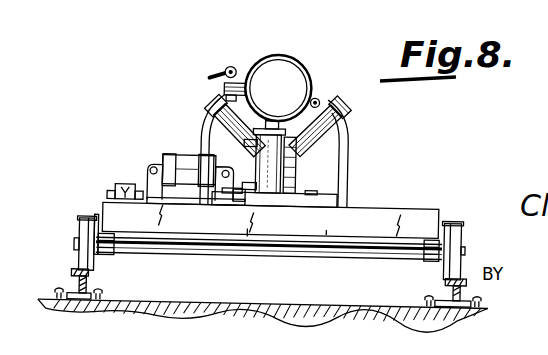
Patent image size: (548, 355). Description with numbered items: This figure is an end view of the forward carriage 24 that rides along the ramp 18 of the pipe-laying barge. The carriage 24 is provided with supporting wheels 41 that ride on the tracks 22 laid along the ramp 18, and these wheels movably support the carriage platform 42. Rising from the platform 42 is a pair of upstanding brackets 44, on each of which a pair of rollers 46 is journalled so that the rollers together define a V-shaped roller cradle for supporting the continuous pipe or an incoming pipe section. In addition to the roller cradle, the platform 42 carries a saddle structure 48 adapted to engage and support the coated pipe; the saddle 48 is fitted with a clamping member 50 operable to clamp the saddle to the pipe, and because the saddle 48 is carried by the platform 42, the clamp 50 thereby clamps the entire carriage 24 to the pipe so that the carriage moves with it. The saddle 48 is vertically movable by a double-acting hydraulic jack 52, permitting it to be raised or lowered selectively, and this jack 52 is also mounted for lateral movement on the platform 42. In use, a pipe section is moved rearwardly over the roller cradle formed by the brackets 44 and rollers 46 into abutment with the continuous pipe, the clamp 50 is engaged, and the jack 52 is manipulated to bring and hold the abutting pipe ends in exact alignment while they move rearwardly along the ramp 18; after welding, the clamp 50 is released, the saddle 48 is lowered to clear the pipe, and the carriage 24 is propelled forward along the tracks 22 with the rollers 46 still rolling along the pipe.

The ramp 18 is at (327, 308).
The tracks 22 is at (89, 286).
The carriage 24 is at (391, 204).
The supporting wheels 41 is at (85, 225).
The carriage platform 42 is at (361, 217).
The upstanding brackets 44 is at (204, 144).
The rollers 46 is at (222, 123).
The saddle structure 48 is at (288, 118).
The clamping member 50 is at (279, 64).
The double-acting hydraulic jack 52 is at (279, 163).